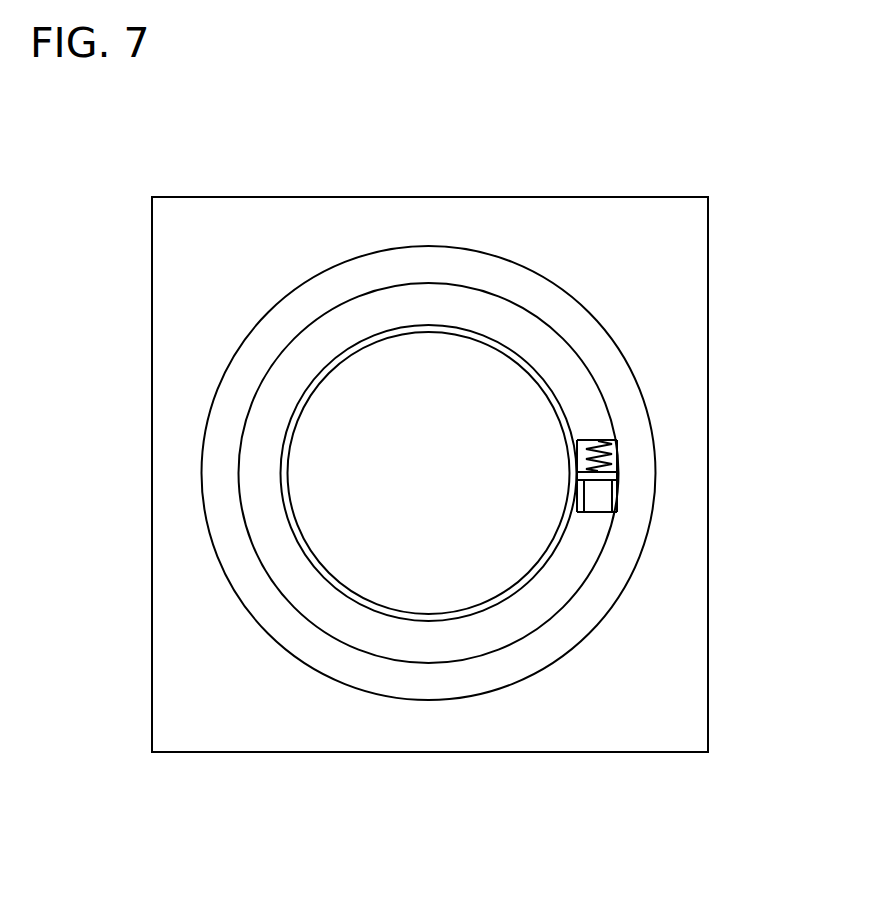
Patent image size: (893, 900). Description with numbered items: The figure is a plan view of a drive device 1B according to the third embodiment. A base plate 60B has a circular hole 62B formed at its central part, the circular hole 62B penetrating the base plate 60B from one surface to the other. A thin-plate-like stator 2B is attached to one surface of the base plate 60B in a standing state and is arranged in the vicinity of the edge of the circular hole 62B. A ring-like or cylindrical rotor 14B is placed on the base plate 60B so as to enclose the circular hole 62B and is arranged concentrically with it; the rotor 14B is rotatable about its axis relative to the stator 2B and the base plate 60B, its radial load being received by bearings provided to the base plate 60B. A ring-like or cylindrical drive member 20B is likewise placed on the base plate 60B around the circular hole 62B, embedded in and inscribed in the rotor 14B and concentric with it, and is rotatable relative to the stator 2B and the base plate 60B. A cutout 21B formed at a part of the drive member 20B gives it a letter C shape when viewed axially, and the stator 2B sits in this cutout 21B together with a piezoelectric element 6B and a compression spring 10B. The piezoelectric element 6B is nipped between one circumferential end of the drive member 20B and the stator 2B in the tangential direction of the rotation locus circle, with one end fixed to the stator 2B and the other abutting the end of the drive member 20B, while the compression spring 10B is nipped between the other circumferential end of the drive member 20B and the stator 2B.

The drive device 1B is at (224, 181).
The base plate 60B is at (323, 219).
The rotor 14B is at (645, 452).
The drive member 20B is at (420, 650).
The circular hole 62B is at (346, 356).
The cutout 21B is at (579, 510).
The compression spring 10B is at (612, 450).
The stator 2B is at (583, 476).
The piezoelectric element 6B is at (599, 496).